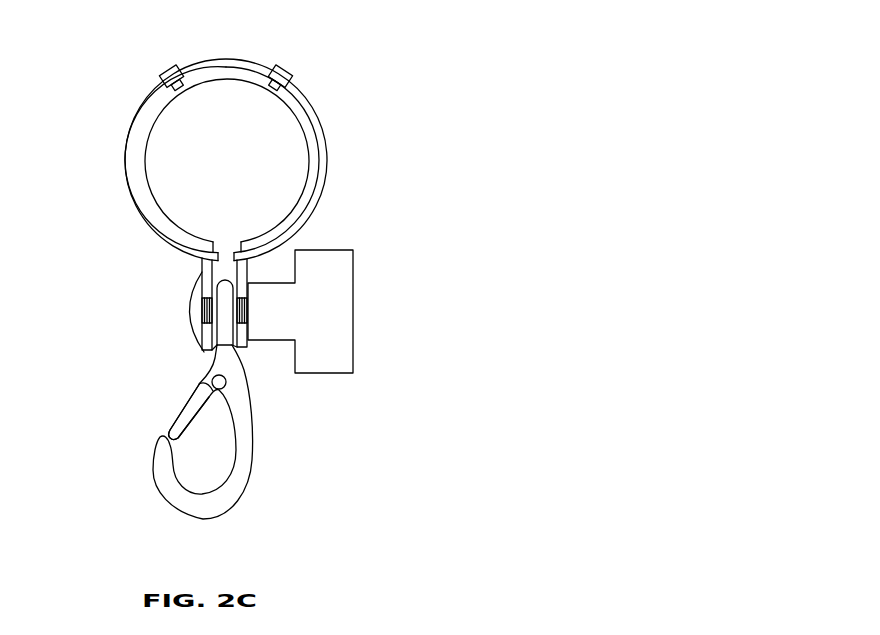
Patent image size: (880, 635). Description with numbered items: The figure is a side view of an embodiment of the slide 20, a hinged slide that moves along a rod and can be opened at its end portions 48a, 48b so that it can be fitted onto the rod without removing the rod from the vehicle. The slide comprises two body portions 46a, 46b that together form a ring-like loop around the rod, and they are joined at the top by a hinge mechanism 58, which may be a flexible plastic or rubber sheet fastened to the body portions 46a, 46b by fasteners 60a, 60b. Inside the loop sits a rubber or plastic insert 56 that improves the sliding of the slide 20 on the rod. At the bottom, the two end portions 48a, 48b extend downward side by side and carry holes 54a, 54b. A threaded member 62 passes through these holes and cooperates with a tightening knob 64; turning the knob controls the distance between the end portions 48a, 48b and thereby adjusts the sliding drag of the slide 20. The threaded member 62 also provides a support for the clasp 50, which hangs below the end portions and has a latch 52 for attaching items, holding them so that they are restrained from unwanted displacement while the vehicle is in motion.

The slide 20 is at (345, 143).
The slide member body portion 46a is at (125, 173).
The slide member body portion 46b is at (322, 203).
The end portion 48a is at (207, 355).
The end portion 48b is at (243, 350).
The clasp 50 is at (252, 457).
The latch 52 is at (167, 422).
The hole 54a is at (202, 298).
The hole 54b is at (248, 313).
The insert 56 is at (148, 155).
The hinge mechanism 58 is at (232, 57).
The fastener 60a is at (168, 67).
The fastener 60b is at (282, 67).
The threaded member 62 is at (188, 313).
The tightening knob 64 is at (343, 334).